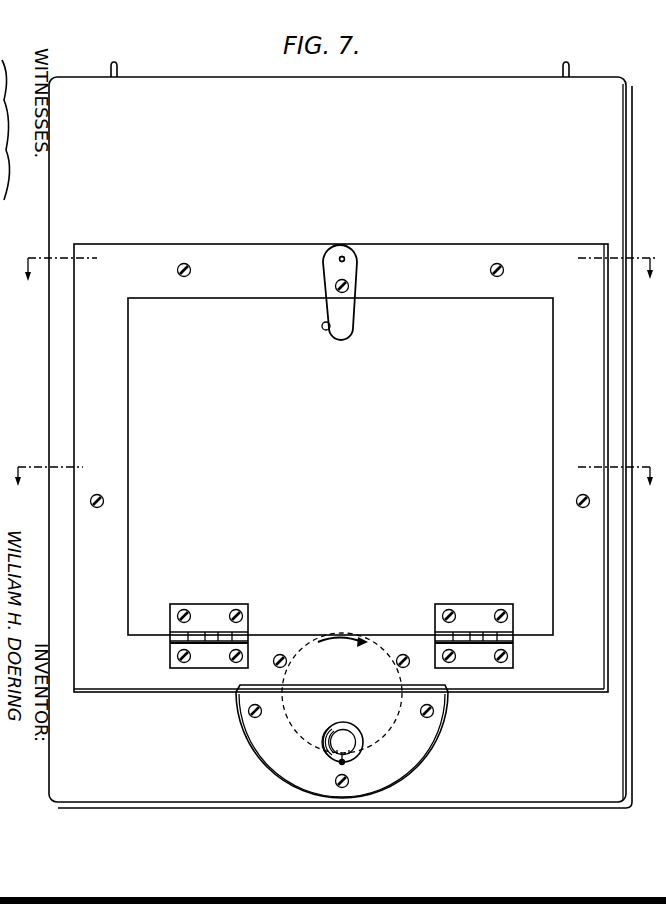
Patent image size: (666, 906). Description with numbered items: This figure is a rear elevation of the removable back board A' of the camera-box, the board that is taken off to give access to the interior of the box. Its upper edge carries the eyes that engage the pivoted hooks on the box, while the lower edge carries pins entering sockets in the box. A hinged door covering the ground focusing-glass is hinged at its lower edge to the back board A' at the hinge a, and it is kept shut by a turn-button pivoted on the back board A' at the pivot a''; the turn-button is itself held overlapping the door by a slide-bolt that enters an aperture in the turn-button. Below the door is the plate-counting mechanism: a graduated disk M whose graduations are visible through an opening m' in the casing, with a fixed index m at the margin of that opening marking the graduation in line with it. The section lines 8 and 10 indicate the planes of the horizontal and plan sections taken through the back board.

The removable back board A' is at (341, 443).
The hinge a is at (341, 636).
The pivot of turn-button a'' is at (323, 289).
The graduated disk M is at (290, 740).
The opening m' is at (342, 734).
The fixed index m is at (360, 764).
The section line 10 10 is at (340, 261).
The section line 8 8 is at (337, 466).